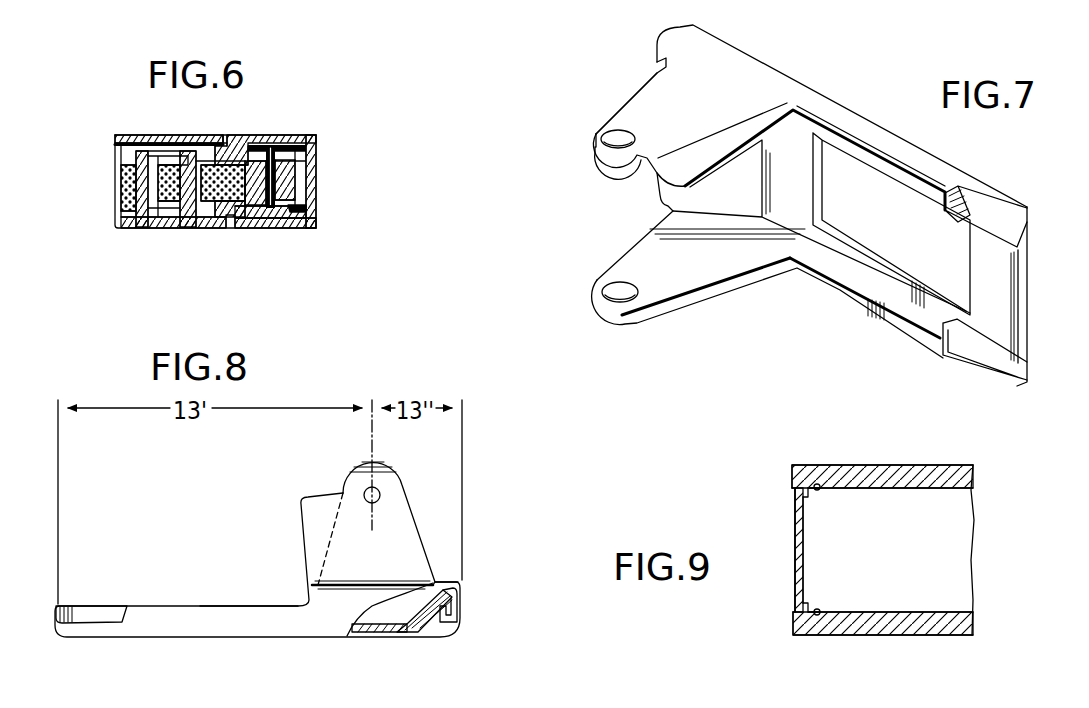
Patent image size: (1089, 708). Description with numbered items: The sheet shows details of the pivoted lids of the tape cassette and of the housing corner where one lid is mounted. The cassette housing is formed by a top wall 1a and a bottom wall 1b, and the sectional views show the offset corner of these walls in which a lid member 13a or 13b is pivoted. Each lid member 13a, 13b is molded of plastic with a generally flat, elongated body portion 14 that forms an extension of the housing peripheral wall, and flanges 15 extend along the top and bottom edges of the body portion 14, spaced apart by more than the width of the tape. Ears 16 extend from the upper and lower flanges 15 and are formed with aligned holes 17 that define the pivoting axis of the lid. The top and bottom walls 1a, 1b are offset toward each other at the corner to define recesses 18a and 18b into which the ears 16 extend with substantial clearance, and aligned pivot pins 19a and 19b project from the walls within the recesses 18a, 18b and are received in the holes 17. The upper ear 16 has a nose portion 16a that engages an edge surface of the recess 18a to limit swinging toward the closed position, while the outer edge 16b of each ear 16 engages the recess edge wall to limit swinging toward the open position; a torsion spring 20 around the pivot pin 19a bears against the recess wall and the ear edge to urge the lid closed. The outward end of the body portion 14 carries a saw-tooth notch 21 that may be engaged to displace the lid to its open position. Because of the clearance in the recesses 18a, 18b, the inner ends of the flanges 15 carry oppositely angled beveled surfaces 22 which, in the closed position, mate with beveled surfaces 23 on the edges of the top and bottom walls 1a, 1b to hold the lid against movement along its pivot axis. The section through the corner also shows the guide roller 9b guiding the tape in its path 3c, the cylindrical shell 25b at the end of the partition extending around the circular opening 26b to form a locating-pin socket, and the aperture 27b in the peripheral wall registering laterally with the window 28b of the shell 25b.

In FIG. 6, the top wall 1a is at (128, 135).
In FIG. 9, the top wall 1a is at (880, 477).
In FIG. 6, the bottom wall 1b is at (122, 228).
In FIG. 9, the bottom wall 1b is at (912, 623).
In FIG. 6, the tape path 3c is at (210, 200).
In FIG. 6, the guide roller 9b is at (300, 212).
In FIG. 7, the lid member 13a is at (843, 86).
In FIG. 9, the lid member 13a is at (788, 530).
In FIG. 6, the lid member 13b is at (319, 160).
In FIG. 7, the elongated body portion 14 is at (1029, 296).
In FIG. 8, the elongated body portion 14 is at (370, 630).
In FIG. 9, the elongated body portion 14 is at (796, 550).
In FIG. 7, the flanges 15 is at (864, 150).
In FIG. 8, the flanges 15 is at (203, 615).
In FIG. 6, the ears 16 is at (278, 140).
In FIG. 7, the ears 16 is at (640, 100).
In FIG. 8, the ears 16 is at (397, 522).
In FIG. 7, the nose portion 16a is at (655, 175).
In FIG. 8, the nose portion 16a is at (320, 513).
In FIG. 7, the outer edge 16b is at (612, 112).
In FIG. 8, the outer edge 16b is at (425, 547).
In FIG. 7, the holes 17 is at (612, 136).
In FIG. 8, the holes 17 is at (382, 496).
In FIG. 6, the recess 18a is at (311, 140).
In FIG. 6, the recess 18b is at (308, 213).
In FIG. 6, the pivot pin 19a is at (236, 140).
In FIG. 6, the pivot pin 19b is at (244, 219).
In FIG. 6, the torsion spring 20 is at (255, 136).
In FIG. 8, the notch 21 is at (435, 622).
In FIG. 7, the beveled surfaces 22 is at (984, 210).
In FIG. 8, the beveled surfaces 22 is at (99, 613).
In FIG. 9, the beveled surfaces 22 is at (808, 474).
In FIG. 9, the beveled surfaces 23 is at (818, 489).
In FIG. 6, the cylindrical shell 25b is at (120, 183).
In FIG. 6, the circular opening 26b is at (143, 150).
In FIG. 6, the aperture 27b is at (176, 206).
In FIG. 6, the window 28b is at (172, 156).